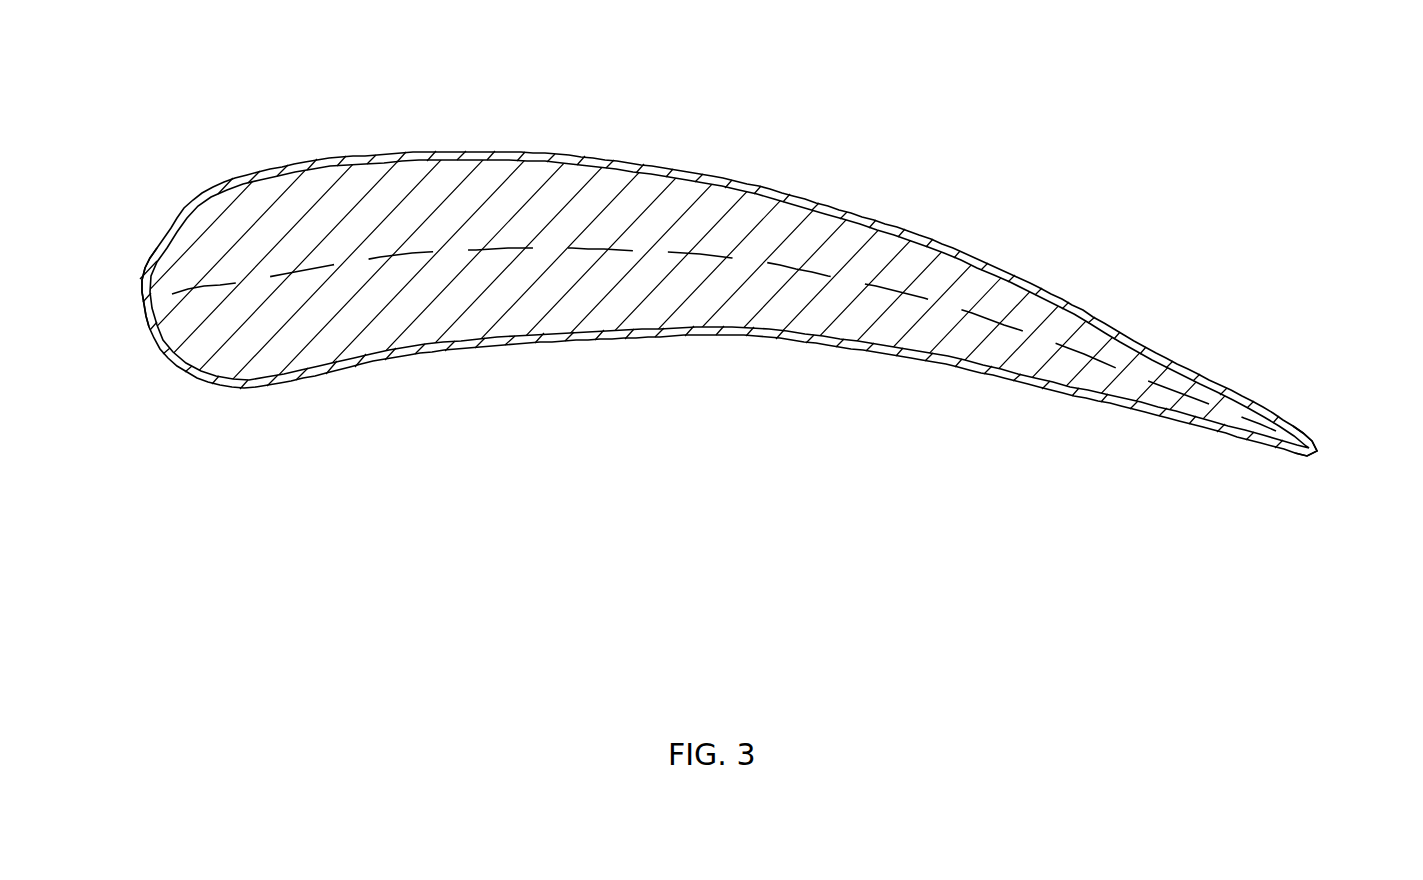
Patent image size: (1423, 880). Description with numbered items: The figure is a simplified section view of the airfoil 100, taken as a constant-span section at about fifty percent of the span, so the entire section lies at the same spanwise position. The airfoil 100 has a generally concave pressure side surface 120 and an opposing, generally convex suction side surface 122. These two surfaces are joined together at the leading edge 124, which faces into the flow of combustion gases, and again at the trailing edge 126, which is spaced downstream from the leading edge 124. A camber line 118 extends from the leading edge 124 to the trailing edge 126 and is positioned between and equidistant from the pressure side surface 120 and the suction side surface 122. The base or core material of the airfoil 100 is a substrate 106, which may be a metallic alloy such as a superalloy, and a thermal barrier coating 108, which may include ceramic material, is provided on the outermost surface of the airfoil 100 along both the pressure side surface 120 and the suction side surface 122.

The airfoil 100 is at (305, 130).
The substrate 106 is at (580, 305).
The thermal barrier coating 108 is at (463, 152).
The camber line 118 is at (808, 280).
The pressure side surface 120 is at (710, 338).
The suction side surface 122 is at (668, 160).
The leading edge 124 is at (150, 318).
The trailing edge 126 is at (1313, 458).